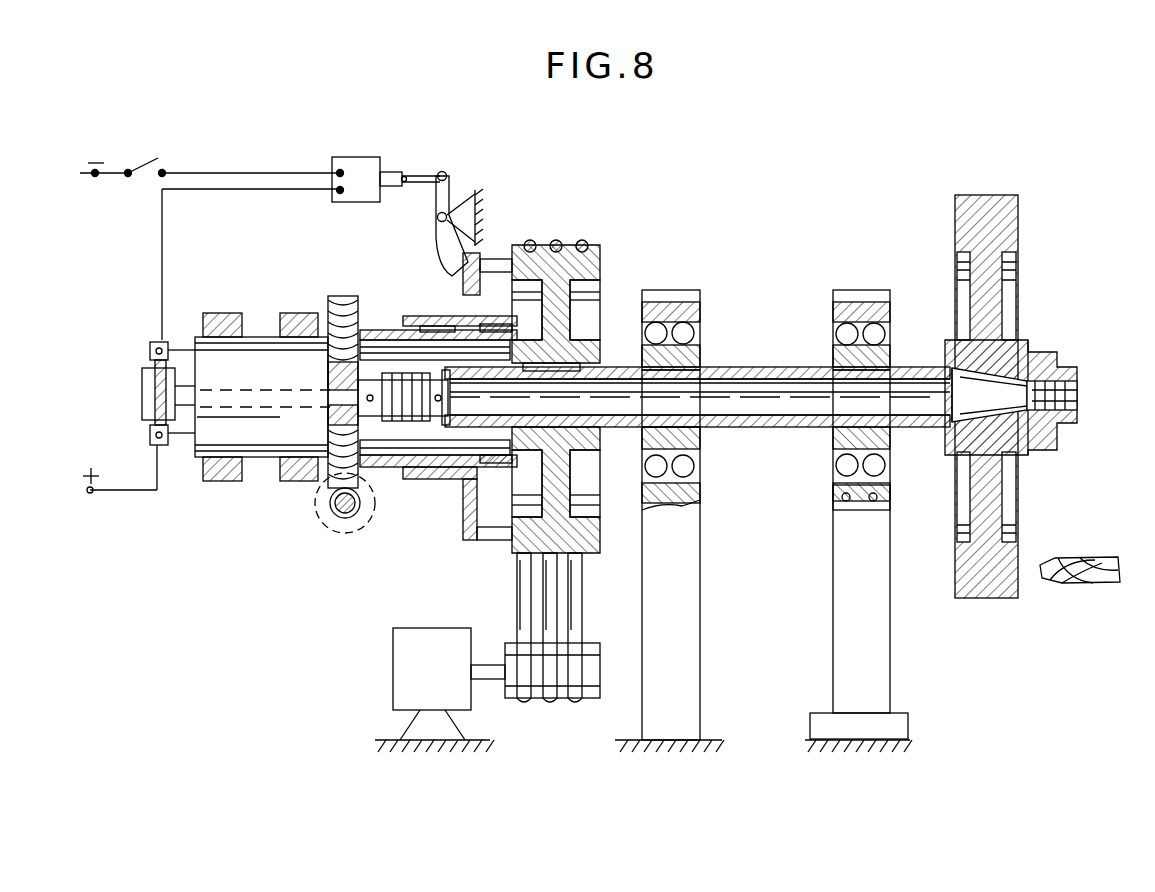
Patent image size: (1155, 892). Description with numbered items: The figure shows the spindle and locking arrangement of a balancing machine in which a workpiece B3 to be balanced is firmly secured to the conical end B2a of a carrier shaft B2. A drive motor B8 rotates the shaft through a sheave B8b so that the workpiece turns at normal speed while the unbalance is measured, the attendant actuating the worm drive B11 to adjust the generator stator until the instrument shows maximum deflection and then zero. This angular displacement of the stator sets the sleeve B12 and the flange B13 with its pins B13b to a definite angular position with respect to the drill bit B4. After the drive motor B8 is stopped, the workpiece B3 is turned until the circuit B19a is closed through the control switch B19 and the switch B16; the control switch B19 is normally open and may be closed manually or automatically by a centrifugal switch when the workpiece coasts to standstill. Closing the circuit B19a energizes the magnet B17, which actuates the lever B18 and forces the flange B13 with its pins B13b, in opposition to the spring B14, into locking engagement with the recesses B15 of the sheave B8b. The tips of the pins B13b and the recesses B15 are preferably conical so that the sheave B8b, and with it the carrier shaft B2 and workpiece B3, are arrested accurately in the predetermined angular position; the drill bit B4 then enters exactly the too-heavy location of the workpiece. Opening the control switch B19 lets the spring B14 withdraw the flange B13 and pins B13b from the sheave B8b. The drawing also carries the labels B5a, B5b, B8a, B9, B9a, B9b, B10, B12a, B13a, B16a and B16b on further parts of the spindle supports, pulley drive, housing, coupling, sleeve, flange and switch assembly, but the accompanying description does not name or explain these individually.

The carrier shaft B2 is at (746, 368).
The conical end B2a is at (1038, 340).
The workpiece B3 is at (1012, 232).
The drill bit B4 is at (1085, 558).
The ball bearings B5a is at (835, 335).
The bearing stands B5b is at (700, 585).
The drive motor B8 is at (393, 667).
The belt pulleys B8a is at (575, 582).
The sheave B8b is at (600, 270).
The gear housing B9 is at (259, 336).
The housing feet B9a is at (217, 314).
The housing bore B9b is at (257, 386).
The coupling B10 is at (426, 422).
The worm drive B11 is at (340, 518).
The sleeve B12 is at (345, 304).
The sleeve B12a is at (402, 330).
The flange B13 is at (462, 514).
The clutch plate B13a is at (434, 478).
The pins B13b is at (487, 258).
The spring B14 is at (485, 324).
The recesses B15 is at (520, 266).
The switch B16 is at (140, 391).
The solenoid upper terminal B16a is at (148, 349).
The solenoid lower terminal B16b is at (143, 436).
The magnet B17 is at (362, 142).
The lever B18 is at (440, 270).
The control switch B19 is at (153, 165).
The circuit B19a is at (161, 249).